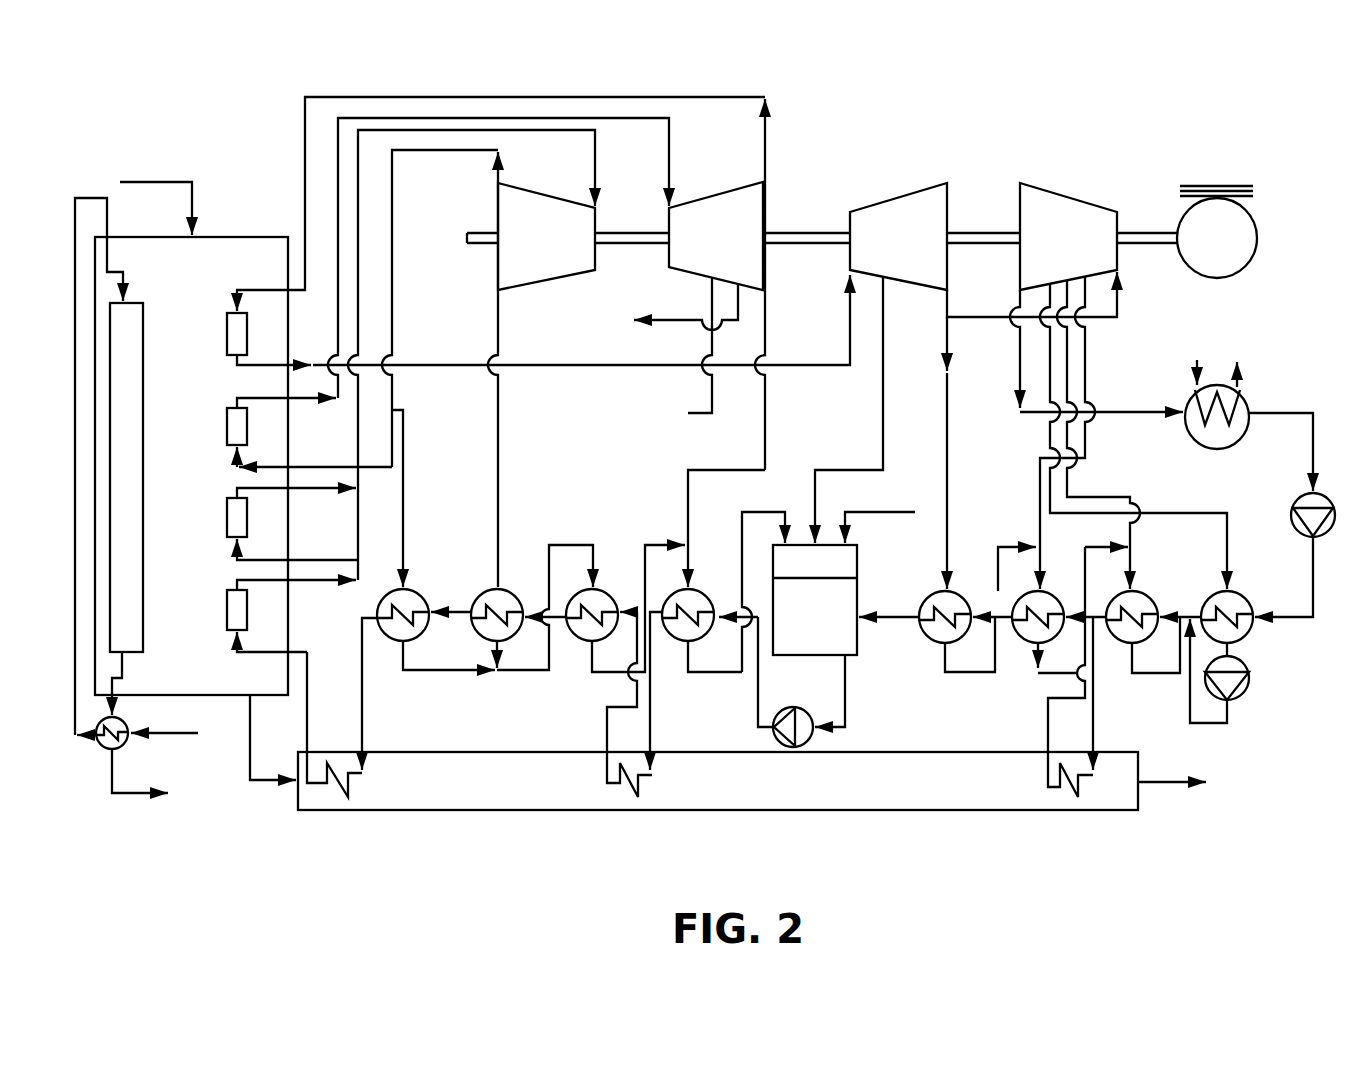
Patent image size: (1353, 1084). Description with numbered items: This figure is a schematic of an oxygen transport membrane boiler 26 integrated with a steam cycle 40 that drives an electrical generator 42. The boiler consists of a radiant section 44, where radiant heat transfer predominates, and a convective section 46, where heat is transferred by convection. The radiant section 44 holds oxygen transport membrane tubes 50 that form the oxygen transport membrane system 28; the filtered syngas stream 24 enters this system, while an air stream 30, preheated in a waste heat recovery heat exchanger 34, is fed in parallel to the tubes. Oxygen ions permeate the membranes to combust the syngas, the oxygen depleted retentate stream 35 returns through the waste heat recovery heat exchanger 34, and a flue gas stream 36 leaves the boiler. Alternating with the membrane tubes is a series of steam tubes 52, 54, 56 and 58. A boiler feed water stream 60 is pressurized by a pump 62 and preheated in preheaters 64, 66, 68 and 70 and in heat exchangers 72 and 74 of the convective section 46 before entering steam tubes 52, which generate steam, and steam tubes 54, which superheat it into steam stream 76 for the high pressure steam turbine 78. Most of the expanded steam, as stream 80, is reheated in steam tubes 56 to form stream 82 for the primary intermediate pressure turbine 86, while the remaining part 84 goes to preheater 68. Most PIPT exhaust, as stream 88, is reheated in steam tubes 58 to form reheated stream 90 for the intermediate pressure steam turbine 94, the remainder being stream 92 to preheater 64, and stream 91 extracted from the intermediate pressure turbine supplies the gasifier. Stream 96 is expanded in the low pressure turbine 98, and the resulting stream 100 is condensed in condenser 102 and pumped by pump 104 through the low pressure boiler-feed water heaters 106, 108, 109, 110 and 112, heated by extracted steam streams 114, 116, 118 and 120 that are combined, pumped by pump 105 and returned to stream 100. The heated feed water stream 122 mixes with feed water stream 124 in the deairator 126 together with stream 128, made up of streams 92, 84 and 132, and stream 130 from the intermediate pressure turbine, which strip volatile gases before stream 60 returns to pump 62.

The filtered syngas stream 24 is at (158, 181).
The oxygen transport membrane boiler 26 is at (222, 798).
The oxygen transport membrane system 28 is at (155, 375).
The air stream 30 is at (190, 735).
The waste heat recovery heat exchanger 34 is at (125, 745).
The retentate stream 35 is at (118, 795).
The flue gas stream 36 is at (1162, 781).
The steam cycle 40 is at (1089, 120).
The electrical generator 42 is at (1258, 238).
The radiant section 44 is at (242, 236).
The convective section 46 is at (924, 749).
The oxygen transport membrane tubes 50 is at (143, 600).
The steam tubes 52 is at (247, 615).
The steam tubes 54 is at (247, 522).
The steam tubes 56 is at (247, 432).
The steam tubes 58 is at (247, 335).
The boiler feed water stream 60 is at (858, 682).
The pump 62 is at (772, 733).
The preheater 64 is at (678, 641).
The preheater 66 is at (581, 641).
The preheater 68 is at (510, 588).
The preheater 70 is at (418, 588).
The heat exchanger 72 is at (610, 800).
The heat exchanger 74 is at (325, 800).
The steam stream 76 is at (598, 180).
The high pressure steam turbine 78 is at (538, 190).
The stream 80 is at (435, 152).
The stream 82 is at (668, 136).
The remaining part 84 is at (498, 474).
The primary intermediate pressure turbine 86 is at (718, 192).
The stream 88 is at (767, 140).
The reheated stream 90 is at (850, 298).
The stream 91 is at (668, 318).
The stream 92 is at (765, 423).
The intermediate pressure steam turbine 94 is at (887, 198).
The stream 96 is at (970, 317).
The low pressure turbine 98 is at (1068, 195).
The stream 100 is at (1017, 388).
The condenser 102 is at (1250, 403).
The pump 104 is at (1293, 506).
The pump 105 is at (1249, 678).
The low pressure boiler-feed water heater 106 is at (1248, 580).
The low pressure boiler-feed water heater 108 is at (1150, 580).
The heat exchanger 109 is at (1053, 790).
The low pressure boiler-feed water heater 110 is at (1057, 580).
The low pressure boiler-feed water heater 112 is at (963, 580).
The extracted steam stream 114 is at (948, 497).
The extracted steam stream 116 is at (1050, 440).
The extracted steam stream 118 is at (1090, 497).
The extracted steam stream 120 is at (1085, 391).
The heated feed water stream 122 is at (887, 618).
The feed water stream 124 is at (888, 512).
The deairator 126 is at (830, 656).
The stream 128 is at (772, 512).
The stream 130 is at (883, 412).
The stream 132 is at (405, 502).